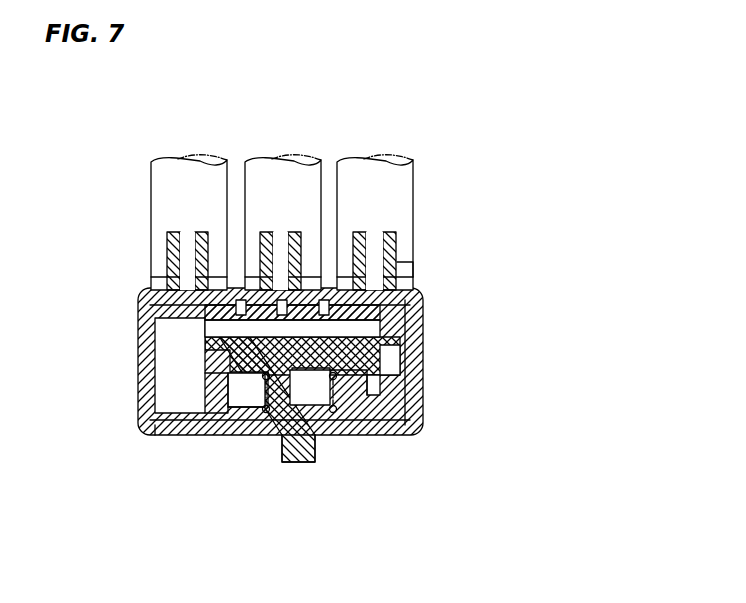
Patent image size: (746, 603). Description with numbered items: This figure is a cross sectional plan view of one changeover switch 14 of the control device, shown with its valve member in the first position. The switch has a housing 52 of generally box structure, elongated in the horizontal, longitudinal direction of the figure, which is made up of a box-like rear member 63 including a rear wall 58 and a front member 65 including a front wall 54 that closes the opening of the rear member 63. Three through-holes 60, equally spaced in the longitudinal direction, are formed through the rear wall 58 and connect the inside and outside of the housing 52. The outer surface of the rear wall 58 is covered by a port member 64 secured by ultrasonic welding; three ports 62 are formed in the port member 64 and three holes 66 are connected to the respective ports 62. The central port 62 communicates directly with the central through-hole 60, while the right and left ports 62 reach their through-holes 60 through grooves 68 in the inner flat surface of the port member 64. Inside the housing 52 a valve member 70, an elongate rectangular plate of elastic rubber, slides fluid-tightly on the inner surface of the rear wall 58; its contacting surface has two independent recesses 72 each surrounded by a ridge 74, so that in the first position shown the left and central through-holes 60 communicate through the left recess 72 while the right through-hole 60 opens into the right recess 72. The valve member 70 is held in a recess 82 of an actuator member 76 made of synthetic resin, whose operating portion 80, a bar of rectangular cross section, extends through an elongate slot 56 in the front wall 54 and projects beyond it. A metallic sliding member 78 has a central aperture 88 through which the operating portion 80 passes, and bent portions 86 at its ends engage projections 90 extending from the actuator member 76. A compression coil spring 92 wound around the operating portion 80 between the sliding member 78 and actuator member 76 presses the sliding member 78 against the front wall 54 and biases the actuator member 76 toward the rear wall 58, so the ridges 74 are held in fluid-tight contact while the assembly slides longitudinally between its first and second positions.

The changeover switch 14 is at (472, 282).
The housing 52 is at (448, 371).
The front wall 54 is at (373, 433).
The elongate slot 56 is at (247, 437).
The rear wall 58 is at (395, 318).
The through-hole 60 is at (240, 298).
The port 62 is at (260, 233).
The rear member 63 is at (425, 343).
The port member 64 is at (403, 268).
The front member 65 is at (185, 440).
The hole 66 is at (170, 165).
The groove 68 is at (205, 292).
The valve member 70 is at (203, 322).
The recess 72 is at (290, 338).
The ridge 74 is at (225, 322).
The actuator member 76 is at (193, 372).
The sliding member 78 is at (333, 440).
The operating portion 80 is at (308, 463).
The recess 82 is at (336, 413).
The bent portion 86 is at (202, 420).
The aperture 88 is at (283, 440).
The projection 90 is at (168, 425).
The compression coil spring 92 is at (265, 413).